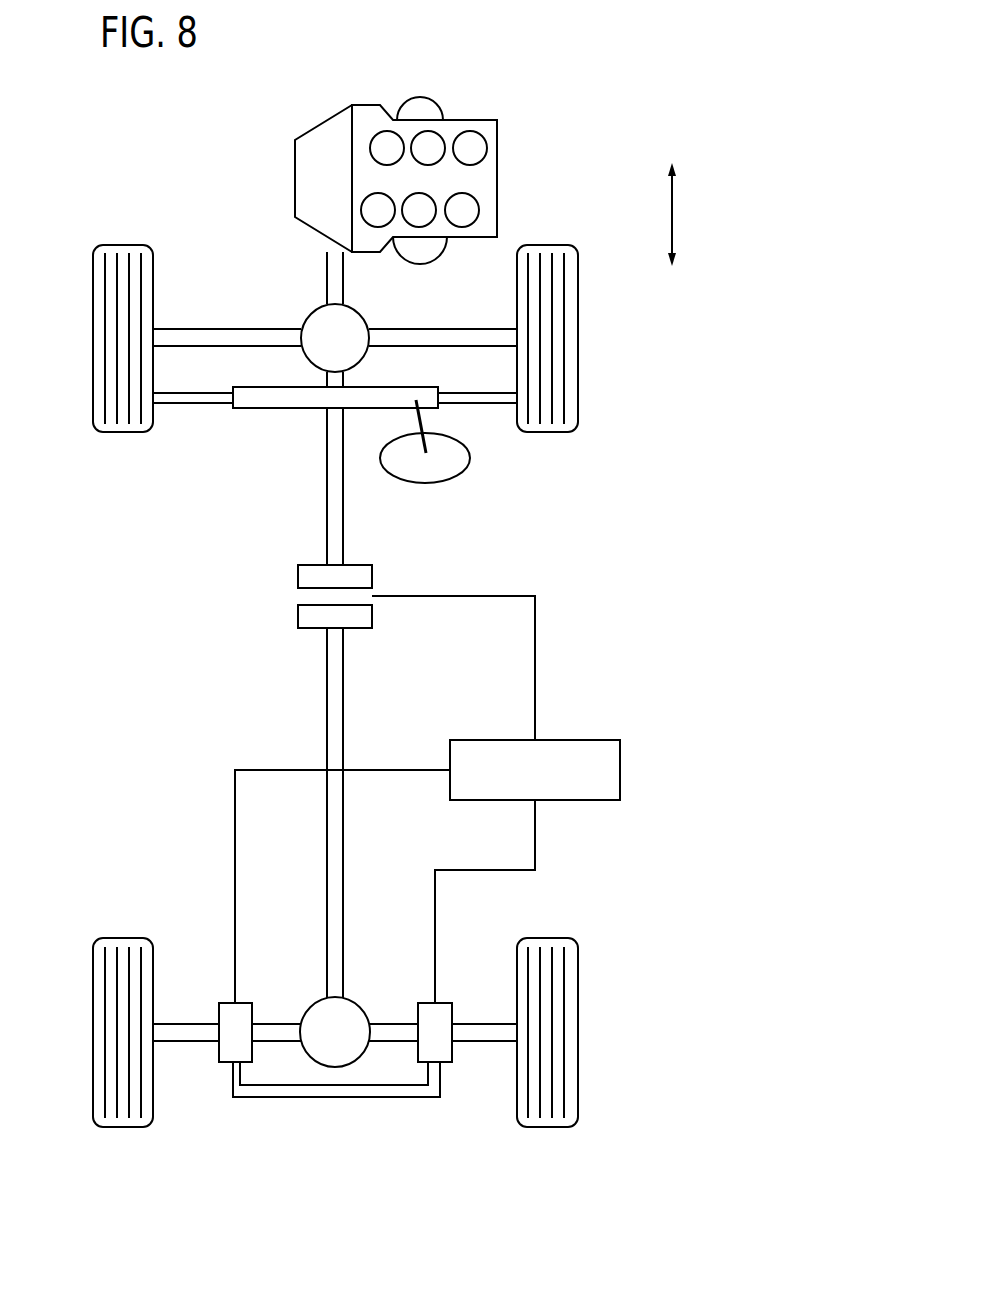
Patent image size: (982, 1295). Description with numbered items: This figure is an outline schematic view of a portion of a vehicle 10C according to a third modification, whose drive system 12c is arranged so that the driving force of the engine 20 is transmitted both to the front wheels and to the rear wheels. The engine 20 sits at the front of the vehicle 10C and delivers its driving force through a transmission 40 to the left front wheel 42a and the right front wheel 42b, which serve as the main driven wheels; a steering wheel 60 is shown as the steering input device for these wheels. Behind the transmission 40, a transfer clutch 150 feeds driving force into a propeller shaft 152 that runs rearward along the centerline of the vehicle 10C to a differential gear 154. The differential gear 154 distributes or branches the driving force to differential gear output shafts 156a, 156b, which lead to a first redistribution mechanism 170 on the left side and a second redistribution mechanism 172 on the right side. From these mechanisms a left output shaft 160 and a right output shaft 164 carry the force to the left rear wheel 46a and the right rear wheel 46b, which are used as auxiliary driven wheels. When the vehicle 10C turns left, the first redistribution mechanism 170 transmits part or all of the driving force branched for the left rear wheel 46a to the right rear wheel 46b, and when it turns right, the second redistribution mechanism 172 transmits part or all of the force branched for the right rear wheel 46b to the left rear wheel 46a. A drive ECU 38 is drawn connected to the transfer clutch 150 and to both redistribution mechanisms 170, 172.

The vehicle 10C is at (123, 101).
The drive system 12c is at (290, 116).
The engine 20 is at (470, 122).
The transmission 40 is at (308, 192).
The left front wheel 42a is at (103, 365).
The right front wheel 42b is at (568, 362).
The steering wheel 60 is at (406, 470).
The transfer clutch 150 is at (282, 562).
The propeller shaft 152 is at (340, 700).
The drive ECU 38 is at (593, 748).
The differential gear 154 is at (353, 1015).
The differential gear output shaft 156a is at (295, 1042).
The differential gear output shaft 156b is at (378, 1042).
The left output shaft 160 is at (184, 1033).
The right output shaft 164 is at (486, 1033).
The first redistribution mechanism 170 is at (225, 1058).
The second redistribution mechanism 172 is at (447, 1058).
The left rear wheel 46a is at (103, 1013).
The right rear wheel 46b is at (568, 1013).